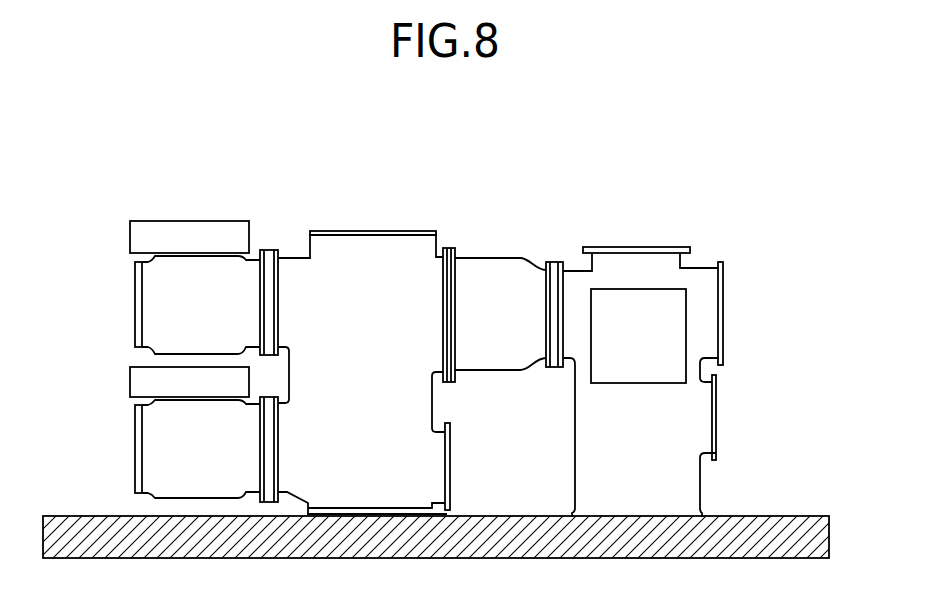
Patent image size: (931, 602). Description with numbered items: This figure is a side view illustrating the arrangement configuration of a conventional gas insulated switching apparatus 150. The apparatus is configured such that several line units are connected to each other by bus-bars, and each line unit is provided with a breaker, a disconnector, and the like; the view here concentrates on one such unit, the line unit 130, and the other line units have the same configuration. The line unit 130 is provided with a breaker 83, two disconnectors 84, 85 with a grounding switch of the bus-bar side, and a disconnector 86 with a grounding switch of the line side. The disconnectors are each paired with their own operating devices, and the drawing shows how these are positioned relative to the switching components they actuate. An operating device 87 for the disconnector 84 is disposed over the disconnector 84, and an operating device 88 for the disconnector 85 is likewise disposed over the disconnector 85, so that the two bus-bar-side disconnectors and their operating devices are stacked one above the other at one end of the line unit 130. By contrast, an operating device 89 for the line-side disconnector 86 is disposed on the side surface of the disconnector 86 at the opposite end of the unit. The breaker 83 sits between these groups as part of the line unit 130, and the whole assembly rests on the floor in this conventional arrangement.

The gas insulated switching apparatus 150 is at (567, 163).
The line unit 130 is at (373, 253).
The breaker 83 is at (435, 465).
The disconnector 84 is at (150, 446).
The disconnector 85 is at (150, 306).
The disconnector 86 is at (707, 299).
The operating device 87 is at (138, 377).
The operating device 88 is at (138, 237).
The operating device 89 is at (670, 333).